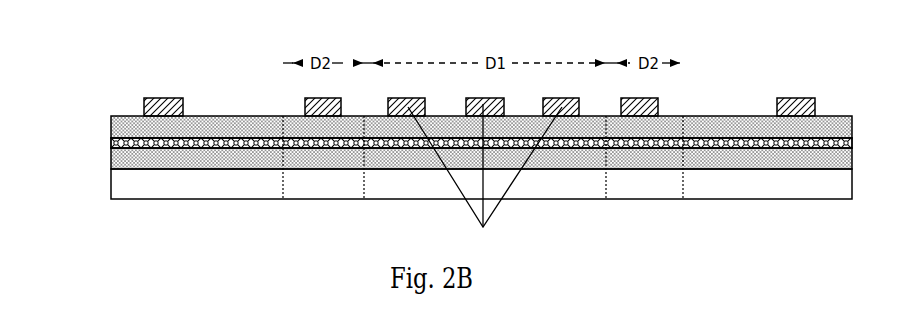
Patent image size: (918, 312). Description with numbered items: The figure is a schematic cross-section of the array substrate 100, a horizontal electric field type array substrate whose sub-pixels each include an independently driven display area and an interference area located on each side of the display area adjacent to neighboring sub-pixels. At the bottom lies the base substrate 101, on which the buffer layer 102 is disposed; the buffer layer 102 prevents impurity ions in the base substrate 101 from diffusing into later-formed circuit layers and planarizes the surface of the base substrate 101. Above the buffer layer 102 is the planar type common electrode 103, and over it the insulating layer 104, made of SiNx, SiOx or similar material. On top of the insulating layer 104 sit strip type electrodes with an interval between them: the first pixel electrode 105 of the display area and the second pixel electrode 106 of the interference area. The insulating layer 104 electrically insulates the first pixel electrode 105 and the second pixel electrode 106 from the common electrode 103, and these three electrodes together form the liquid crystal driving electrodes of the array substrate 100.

The array substrate 100 is at (728, 43).
The base substrate 101 is at (111, 193).
The buffer layer 102 is at (111, 162).
The common electrode 103 is at (111, 143).
The insulating layer 104 is at (111, 122).
The first pixel electrode 105 is at (485, 179).
The second pixel electrode 106 is at (305, 103).